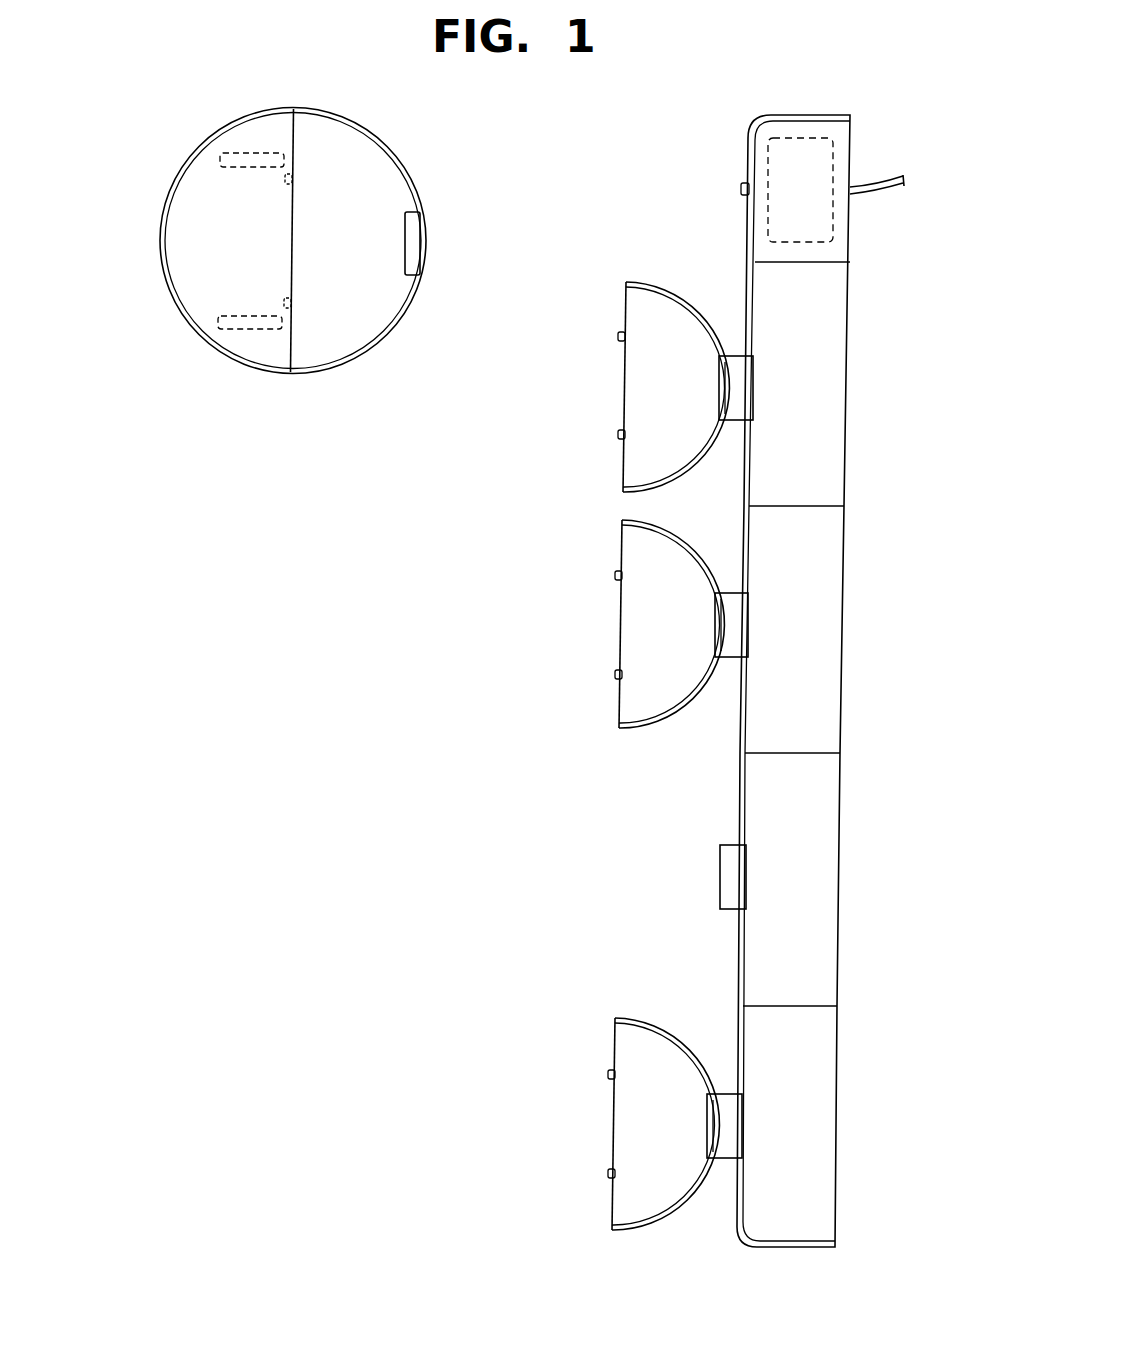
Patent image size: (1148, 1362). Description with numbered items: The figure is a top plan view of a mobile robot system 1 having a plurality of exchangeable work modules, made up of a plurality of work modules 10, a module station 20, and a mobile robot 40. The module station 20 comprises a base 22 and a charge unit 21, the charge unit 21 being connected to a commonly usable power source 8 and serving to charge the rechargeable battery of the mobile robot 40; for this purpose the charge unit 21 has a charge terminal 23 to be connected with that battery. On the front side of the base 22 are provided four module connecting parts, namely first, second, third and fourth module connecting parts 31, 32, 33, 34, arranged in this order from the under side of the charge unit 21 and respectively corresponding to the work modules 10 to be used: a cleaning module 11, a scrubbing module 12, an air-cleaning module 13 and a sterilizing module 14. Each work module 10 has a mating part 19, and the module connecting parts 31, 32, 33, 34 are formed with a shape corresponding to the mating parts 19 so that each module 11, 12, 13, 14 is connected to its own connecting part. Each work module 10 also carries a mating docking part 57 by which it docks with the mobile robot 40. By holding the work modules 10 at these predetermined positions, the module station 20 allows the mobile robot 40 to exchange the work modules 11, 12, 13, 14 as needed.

The mobile robot system 1 is at (520, 101).
The power source 8 is at (893, 180).
The work module 10 is at (444, 669).
The cleaning module 11 is at (652, 318).
The scrubbing module 12 is at (648, 553).
The air-cleaning module 13 is at (330, 241).
The sterilizing module 14 is at (640, 1053).
The mating part 19 is at (418, 242).
The module station 20 is at (801, 679).
The charge unit 21 is at (792, 153).
The base 22 is at (850, 289).
The charge terminal 23 is at (741, 189).
The first module connecting part 31 is at (738, 365).
The second module connecting part 32 is at (735, 603).
The third module connecting part 33 is at (730, 853).
The fourth module connecting part 34 is at (728, 1103).
The mobile robot 40 is at (149, 240).
The mating docking part 57 is at (617, 336).